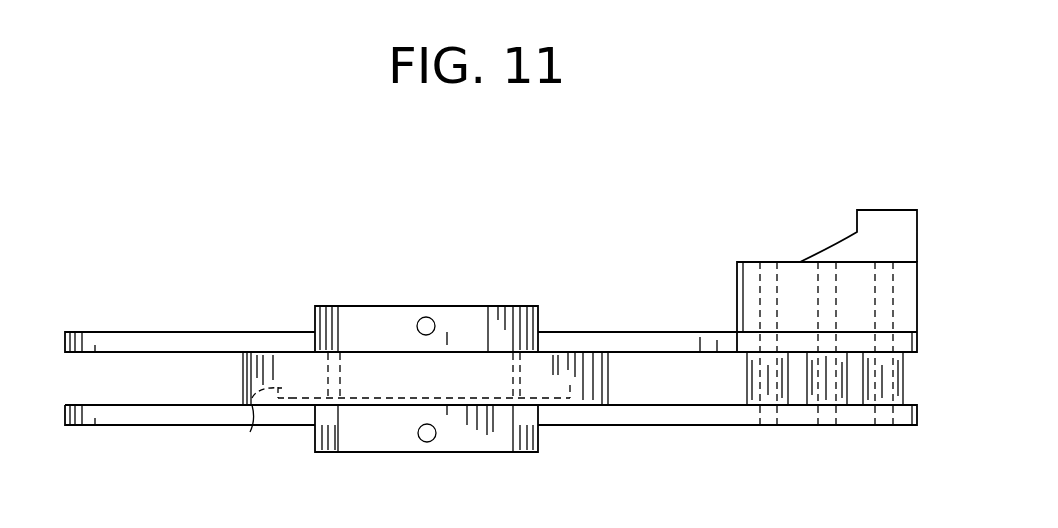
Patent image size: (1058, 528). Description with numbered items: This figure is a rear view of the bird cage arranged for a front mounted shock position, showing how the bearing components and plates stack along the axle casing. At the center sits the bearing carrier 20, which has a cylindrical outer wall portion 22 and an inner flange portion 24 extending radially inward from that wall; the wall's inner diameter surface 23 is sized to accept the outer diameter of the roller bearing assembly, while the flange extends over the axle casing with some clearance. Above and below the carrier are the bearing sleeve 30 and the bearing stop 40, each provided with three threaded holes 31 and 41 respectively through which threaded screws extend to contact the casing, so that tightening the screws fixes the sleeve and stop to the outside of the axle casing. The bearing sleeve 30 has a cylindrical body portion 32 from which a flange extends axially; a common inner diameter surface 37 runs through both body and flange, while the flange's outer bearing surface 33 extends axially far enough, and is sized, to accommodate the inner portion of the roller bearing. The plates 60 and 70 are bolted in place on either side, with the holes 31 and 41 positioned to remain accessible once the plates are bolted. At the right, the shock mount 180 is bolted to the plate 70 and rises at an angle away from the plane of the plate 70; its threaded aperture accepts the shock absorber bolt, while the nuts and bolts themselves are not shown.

The bearing carrier 20 is at (482, 367).
The cylindrical outer wall portion 22 is at (243, 372).
The inner diameter surface 23 is at (570, 380).
The inner flange portion 24 is at (250, 432).
The bearing sleeve 30 is at (378, 323).
The threaded holes 31 is at (424, 317).
The cylindrical body portion 32 is at (330, 305).
The outer bearing surface 33 is at (328, 377).
The common inner diameter surface 37 is at (515, 330).
The bearing stop 40 is at (363, 435).
The threaded holes 41 is at (436, 434).
The plate 60 is at (95, 404).
The plate 70 is at (637, 406).
The shock mount 180 is at (870, 222).